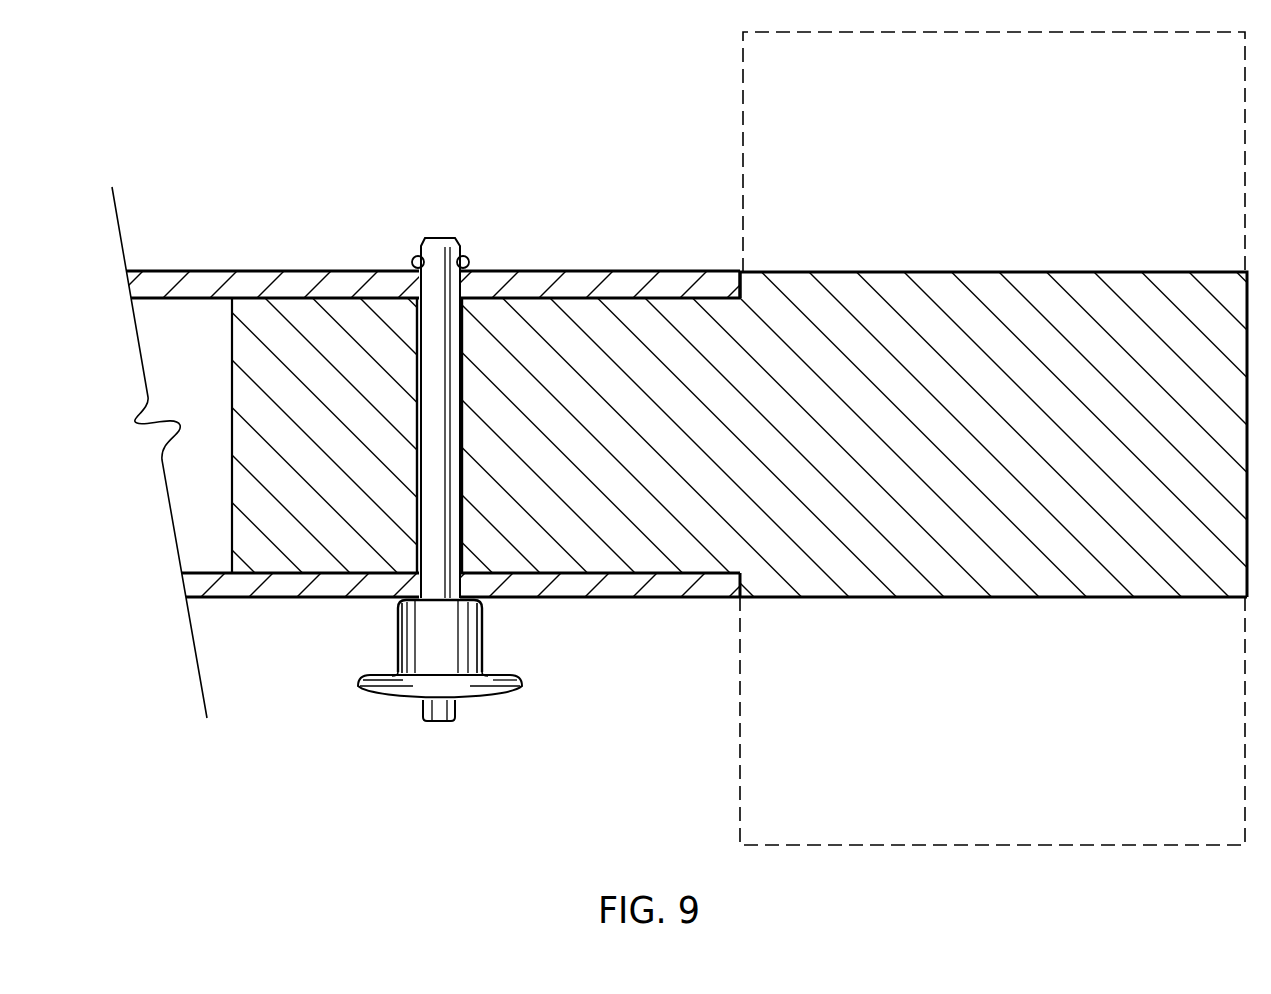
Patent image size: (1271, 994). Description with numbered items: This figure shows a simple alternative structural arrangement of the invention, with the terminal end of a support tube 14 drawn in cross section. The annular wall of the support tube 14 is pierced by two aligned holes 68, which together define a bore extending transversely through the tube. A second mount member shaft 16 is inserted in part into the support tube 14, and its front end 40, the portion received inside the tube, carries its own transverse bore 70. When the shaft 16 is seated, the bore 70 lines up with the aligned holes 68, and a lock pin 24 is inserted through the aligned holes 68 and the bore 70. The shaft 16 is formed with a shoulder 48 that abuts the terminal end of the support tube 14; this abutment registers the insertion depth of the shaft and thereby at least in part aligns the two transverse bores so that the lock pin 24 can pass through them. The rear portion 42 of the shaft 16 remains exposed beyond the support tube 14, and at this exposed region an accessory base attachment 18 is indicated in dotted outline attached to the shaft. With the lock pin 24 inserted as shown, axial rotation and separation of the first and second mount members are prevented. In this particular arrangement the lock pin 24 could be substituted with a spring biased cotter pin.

The support tube 14 is at (245, 271).
The second mount member shaft 16 is at (1112, 598).
The accessory base attachment 18 is at (738, 700).
The lock pin 24 is at (446, 237).
The front end 40 is at (641, 312).
The rear portion 42 is at (979, 271).
The shoulder 48 is at (752, 275).
The aligned holes 68 is at (463, 285).
The transverse bore 70 is at (462, 472).